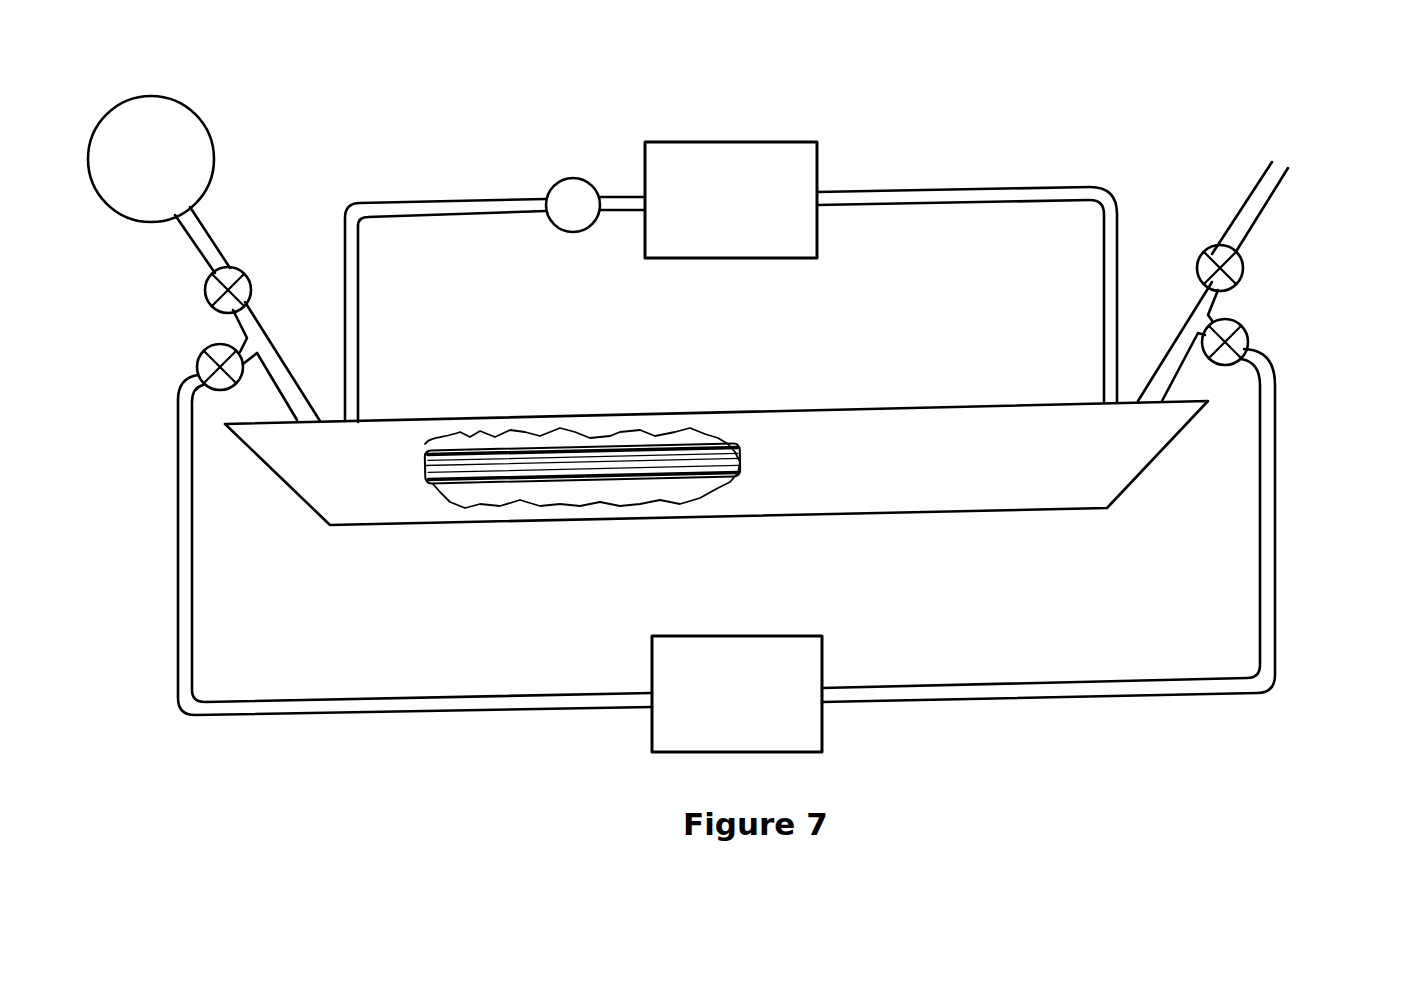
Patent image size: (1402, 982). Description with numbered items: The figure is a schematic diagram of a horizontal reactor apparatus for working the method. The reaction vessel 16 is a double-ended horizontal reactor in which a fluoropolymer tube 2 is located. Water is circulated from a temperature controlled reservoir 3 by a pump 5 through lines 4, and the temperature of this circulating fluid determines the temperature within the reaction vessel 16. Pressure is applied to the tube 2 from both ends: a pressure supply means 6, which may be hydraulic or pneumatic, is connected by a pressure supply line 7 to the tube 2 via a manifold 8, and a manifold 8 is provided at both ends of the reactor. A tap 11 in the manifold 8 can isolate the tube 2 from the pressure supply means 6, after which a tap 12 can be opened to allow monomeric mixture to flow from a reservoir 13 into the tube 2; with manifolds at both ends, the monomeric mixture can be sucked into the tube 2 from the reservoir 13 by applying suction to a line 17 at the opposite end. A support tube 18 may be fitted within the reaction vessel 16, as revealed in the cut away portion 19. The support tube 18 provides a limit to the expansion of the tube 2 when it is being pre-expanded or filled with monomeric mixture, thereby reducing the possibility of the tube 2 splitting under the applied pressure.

The fluoropolymer tube 2 is at (432, 482).
The temperature controlled reservoir 3 is at (731, 200).
The lines 4 is at (982, 188).
The pump 5 is at (573, 205).
The pressure supply means 6 is at (737, 694).
The pressure supply line 7 is at (933, 687).
The manifold 8 is at (262, 322).
The tap 11 is at (198, 355).
The tap 12 is at (247, 270).
The reservoir 13 is at (159, 184).
The reaction vessel 16 is at (716, 463).
The line 17 is at (1280, 185).
The support tube 18 is at (593, 447).
The cut away portion 19 is at (700, 427).